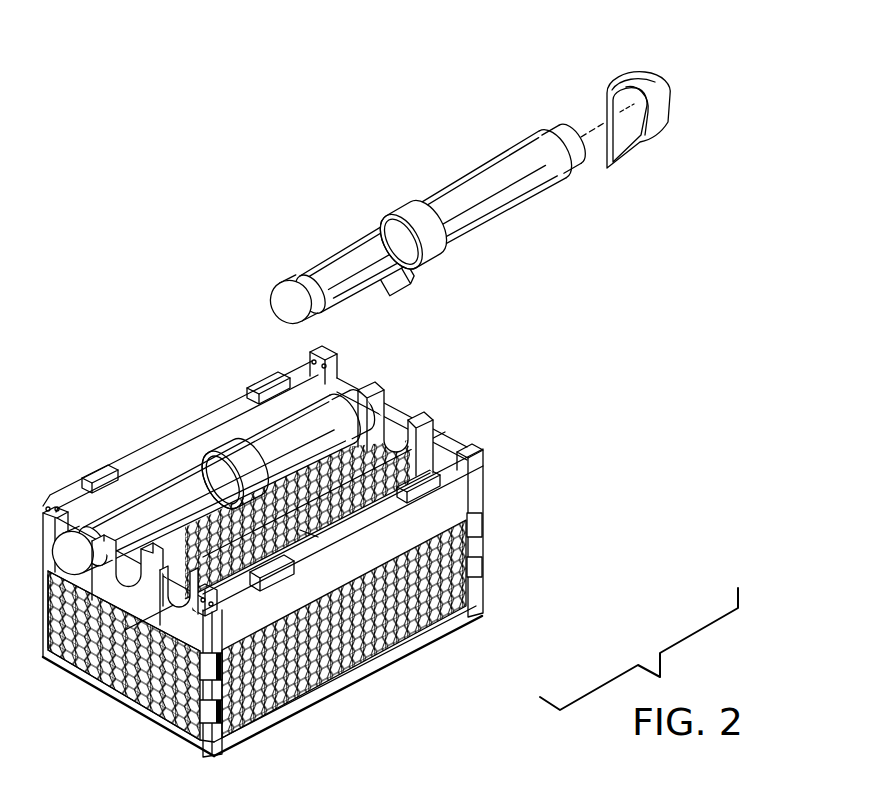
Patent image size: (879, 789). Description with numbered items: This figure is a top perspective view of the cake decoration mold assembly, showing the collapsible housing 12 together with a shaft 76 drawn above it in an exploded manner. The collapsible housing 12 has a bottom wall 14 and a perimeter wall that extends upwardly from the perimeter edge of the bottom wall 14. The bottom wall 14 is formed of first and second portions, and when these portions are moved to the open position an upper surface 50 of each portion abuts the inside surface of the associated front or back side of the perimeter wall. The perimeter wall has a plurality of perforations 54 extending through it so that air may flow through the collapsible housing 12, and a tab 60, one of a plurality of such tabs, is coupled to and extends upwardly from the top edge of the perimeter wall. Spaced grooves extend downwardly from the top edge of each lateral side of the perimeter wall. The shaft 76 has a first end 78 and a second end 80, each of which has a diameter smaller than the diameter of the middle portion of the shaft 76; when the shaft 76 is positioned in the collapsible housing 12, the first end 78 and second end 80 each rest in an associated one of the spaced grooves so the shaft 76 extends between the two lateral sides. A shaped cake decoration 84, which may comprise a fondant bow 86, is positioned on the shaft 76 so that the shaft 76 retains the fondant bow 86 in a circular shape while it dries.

The collapsible housing 12 is at (129, 430).
The bottom wall 14 is at (307, 532).
The upper surface 50 is at (228, 540).
The perforations 54 is at (113, 683).
The tab 60 is at (88, 455).
The shaft 76 is at (505, 222).
The first end 78 is at (563, 126).
The second end 80 is at (279, 284).
The shaped cake decoration 84 is at (683, 76).
The fondant bow 86 is at (406, 204).